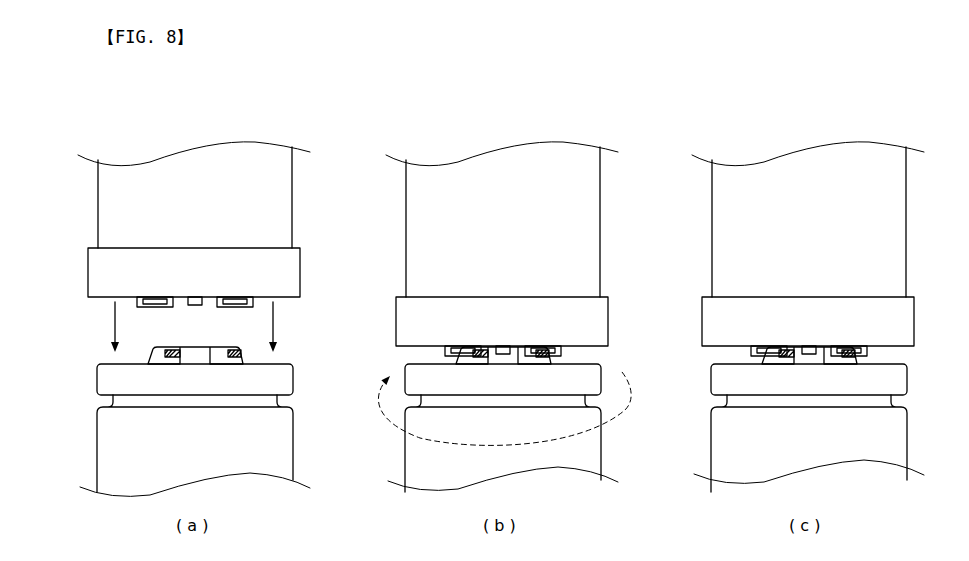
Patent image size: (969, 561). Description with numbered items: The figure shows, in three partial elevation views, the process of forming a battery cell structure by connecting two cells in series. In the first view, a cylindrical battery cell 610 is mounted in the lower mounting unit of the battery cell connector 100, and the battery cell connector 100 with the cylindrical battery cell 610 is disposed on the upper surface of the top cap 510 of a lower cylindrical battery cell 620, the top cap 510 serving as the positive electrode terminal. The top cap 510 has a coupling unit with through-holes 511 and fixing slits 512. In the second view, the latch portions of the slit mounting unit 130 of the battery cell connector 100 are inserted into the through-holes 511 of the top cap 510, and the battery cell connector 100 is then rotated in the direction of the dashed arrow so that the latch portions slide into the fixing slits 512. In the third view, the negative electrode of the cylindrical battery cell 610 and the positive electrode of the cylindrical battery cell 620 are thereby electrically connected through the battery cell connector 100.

The cylindrical battery cell 610 is at (157, 178).
The battery cell connector 100 is at (100, 270).
The slit mounting unit 130 is at (266, 302).
The through-holes 511 is at (197, 357).
The fixing slits 512 is at (178, 357).
The top cap 510 is at (134, 355).
The cylindrical battery cell 620 is at (110, 445).